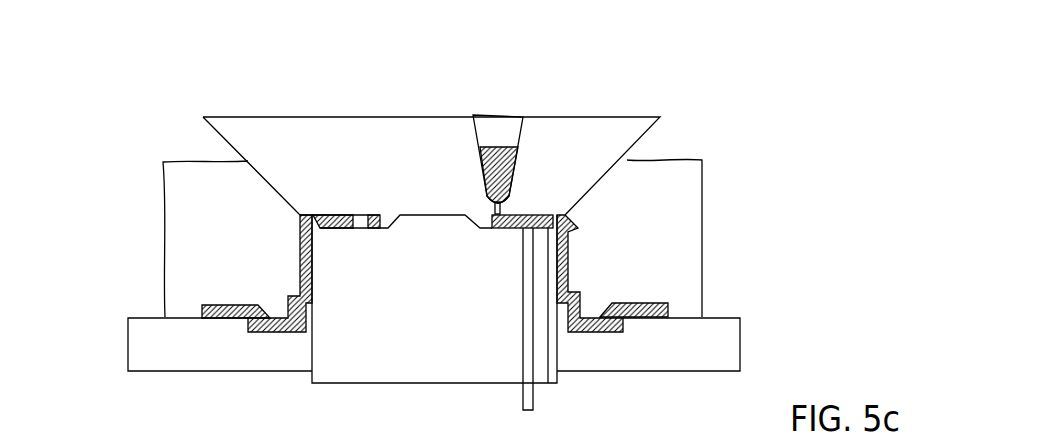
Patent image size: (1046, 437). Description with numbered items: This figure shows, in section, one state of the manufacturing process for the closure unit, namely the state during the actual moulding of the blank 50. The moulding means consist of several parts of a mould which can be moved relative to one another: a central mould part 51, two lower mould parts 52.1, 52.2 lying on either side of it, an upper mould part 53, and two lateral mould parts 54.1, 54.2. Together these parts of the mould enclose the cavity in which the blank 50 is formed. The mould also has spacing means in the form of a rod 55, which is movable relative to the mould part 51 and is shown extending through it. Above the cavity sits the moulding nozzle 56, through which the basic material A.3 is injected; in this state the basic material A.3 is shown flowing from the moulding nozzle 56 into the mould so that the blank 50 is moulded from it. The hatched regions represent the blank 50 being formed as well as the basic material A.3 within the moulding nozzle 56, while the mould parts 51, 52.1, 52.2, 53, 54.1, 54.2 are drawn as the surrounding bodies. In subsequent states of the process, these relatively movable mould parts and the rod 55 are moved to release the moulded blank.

The blank 50 is at (226, 334).
The mould part 51 is at (367, 370).
The mould part 52.1 is at (143, 333).
The mould part 52.2 is at (725, 333).
The mould part 53 is at (337, 136).
The mould part 54.1 is at (180, 210).
The mould part 54.2 is at (688, 212).
The rod 55 is at (533, 397).
The moulding nozzle 56 is at (512, 138).
The basic material A.3 is at (493, 148).